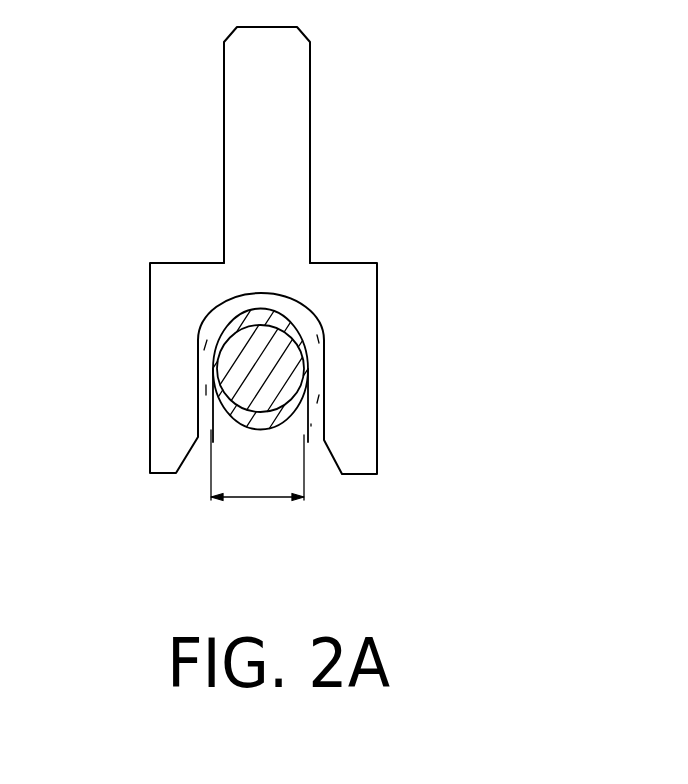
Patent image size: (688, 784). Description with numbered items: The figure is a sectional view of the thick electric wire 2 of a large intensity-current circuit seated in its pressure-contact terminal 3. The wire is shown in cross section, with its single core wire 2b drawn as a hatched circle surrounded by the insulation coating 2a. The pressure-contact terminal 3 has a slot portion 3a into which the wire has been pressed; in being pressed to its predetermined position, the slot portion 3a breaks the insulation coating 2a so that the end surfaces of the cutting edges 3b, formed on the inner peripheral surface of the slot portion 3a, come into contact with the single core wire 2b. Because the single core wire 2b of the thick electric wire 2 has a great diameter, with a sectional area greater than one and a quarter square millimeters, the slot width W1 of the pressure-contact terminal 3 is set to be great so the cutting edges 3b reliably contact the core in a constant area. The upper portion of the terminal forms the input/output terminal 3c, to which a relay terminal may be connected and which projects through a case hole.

The pressure-contact terminal 3 is at (397, 258).
The slot portion 3a is at (326, 368).
The cutting edges 3b is at (311, 424).
The input/output terminal 3c is at (293, 118).
The thick electric wire 2 is at (184, 442).
The insulation coating 2a is at (237, 415).
The single core wire 2b is at (238, 359).
The slot width W1 is at (270, 498).